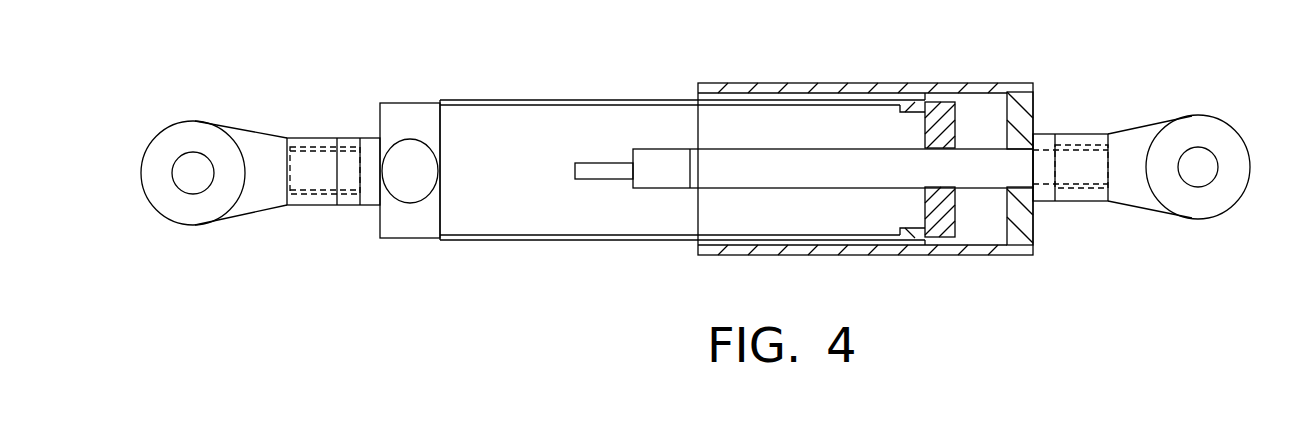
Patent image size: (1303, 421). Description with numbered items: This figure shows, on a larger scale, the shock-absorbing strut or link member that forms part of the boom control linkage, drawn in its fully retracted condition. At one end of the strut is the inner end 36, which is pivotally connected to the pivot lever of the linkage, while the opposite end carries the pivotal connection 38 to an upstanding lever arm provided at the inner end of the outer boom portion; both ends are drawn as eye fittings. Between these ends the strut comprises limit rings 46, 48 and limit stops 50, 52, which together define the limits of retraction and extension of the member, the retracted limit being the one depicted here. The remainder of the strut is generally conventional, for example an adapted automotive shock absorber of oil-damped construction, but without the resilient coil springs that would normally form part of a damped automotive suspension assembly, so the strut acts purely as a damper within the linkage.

The inner end 36 is at (188, 137).
The pivotal connection 38 is at (1208, 128).
The limit ring 46 is at (698, 243).
The limit ring 48 is at (872, 244).
The limit stop 50 is at (955, 111).
The limit stop 52 is at (1037, 110).